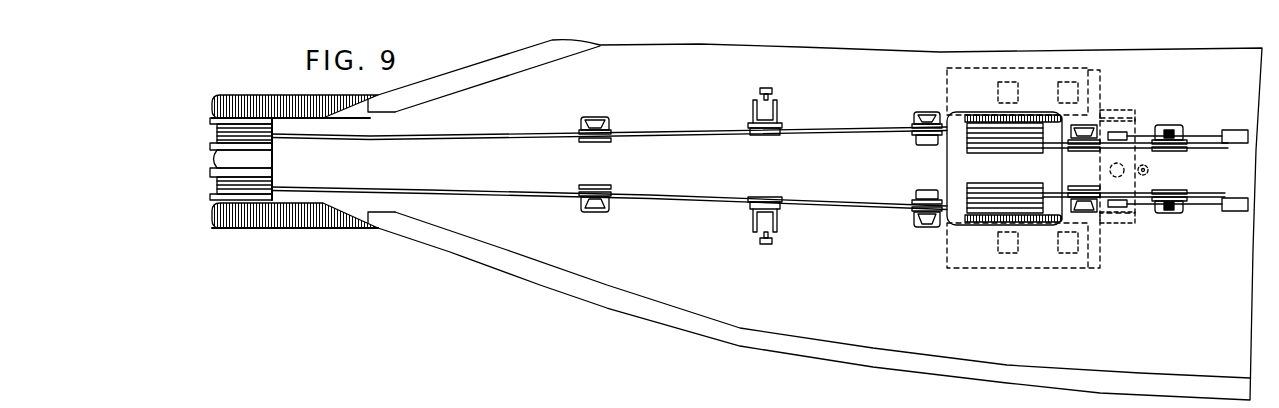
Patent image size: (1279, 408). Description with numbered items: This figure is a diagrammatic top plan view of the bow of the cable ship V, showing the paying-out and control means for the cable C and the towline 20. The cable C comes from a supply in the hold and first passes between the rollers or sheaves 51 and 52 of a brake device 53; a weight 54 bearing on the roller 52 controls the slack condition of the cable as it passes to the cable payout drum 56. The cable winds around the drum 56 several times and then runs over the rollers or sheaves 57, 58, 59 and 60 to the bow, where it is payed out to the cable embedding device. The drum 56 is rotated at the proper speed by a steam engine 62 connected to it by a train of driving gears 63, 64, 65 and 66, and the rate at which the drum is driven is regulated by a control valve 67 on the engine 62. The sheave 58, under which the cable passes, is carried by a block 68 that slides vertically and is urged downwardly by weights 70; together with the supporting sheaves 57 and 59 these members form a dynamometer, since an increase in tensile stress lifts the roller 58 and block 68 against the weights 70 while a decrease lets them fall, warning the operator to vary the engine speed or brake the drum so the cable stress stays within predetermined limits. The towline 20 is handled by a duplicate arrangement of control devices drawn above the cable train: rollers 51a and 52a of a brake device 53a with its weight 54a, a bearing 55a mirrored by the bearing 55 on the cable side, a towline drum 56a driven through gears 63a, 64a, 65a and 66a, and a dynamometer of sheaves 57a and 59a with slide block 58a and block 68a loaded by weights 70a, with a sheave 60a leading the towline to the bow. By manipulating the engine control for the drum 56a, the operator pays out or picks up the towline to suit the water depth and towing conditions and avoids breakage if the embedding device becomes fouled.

The towline 20 is at (830, 129).
The cable C is at (858, 211).
The cable ship V is at (683, 303).
The roller or sheave 51 is at (1185, 208).
The roller or sheave 51a is at (1190, 141).
The roller or sheave 52 is at (1175, 190).
The roller or sheave 52a is at (1180, 150).
The brake device 53 is at (1176, 219).
The brake device 53a is at (1189, 125).
The weight 54 is at (1233, 211).
The weight 54a is at (1233, 130).
The bearing bracket 55 is at (1084, 190).
The bearing bracket 55a is at (1084, 146).
The cable payout drum 56 is at (1003, 186).
The drum 56a is at (1010, 154).
The roller or sheave 57 is at (913, 213).
The sheave 57a is at (913, 139).
The sheave 58 is at (766, 197).
The slide block 58a is at (783, 134).
The roller or sheave 59 is at (586, 186).
The sheave 59a is at (612, 144).
The roller or sheave 60 is at (214, 191).
The roller or sheave 60a is at (216, 130).
The steam engine 62 is at (1137, 222).
The driving gear 63 is at (1128, 225).
The driving gear 63a is at (1135, 115).
The driving gear 64 is at (1100, 236).
The driving gear 64a is at (1108, 112).
The driving gear 65 is at (1052, 224).
The driving gear 65a is at (1050, 115).
The driving gear 66 is at (988, 224).
The driving gear 66a is at (985, 115).
The control valve 67 is at (1149, 170).
The block 68 is at (760, 218).
The block 68a is at (768, 113).
The weight 70 is at (760, 243).
The weight 70a is at (764, 89).